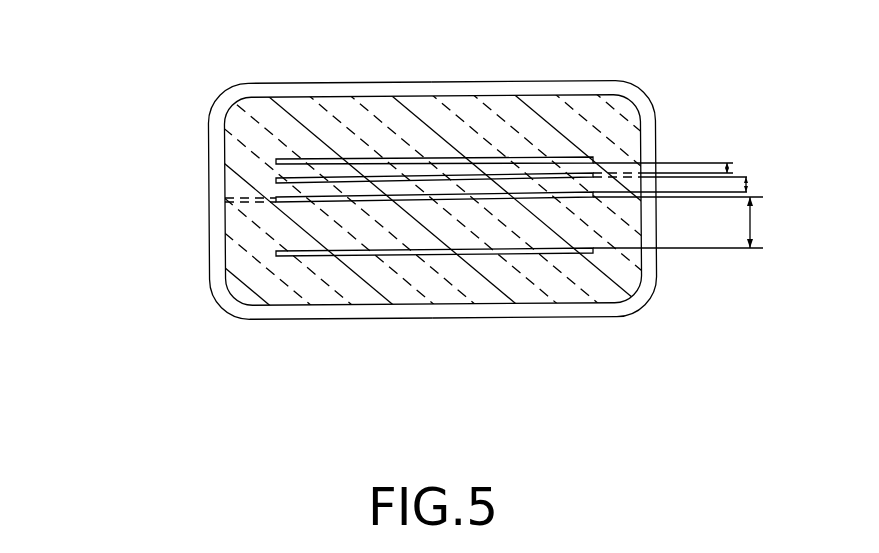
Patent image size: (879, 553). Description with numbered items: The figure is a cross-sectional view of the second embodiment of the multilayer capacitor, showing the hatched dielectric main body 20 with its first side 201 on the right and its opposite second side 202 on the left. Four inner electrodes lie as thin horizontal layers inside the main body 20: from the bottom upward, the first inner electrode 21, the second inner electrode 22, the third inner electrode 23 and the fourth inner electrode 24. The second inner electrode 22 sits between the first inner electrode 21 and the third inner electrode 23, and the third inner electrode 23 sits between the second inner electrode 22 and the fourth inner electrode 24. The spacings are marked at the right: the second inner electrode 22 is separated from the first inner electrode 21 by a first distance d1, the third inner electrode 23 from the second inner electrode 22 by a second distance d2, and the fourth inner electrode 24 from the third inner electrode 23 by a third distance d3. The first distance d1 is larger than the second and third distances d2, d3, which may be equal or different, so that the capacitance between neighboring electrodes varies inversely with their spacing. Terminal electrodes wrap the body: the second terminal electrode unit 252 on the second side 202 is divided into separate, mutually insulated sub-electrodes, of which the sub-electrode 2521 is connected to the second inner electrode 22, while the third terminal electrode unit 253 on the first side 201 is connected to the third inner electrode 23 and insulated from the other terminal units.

The main body 20 is at (413, 96).
The first side 201 is at (678, 80).
The second side 202 is at (194, 122).
The first inner electrode 21 is at (279, 256).
The second inner electrode 22 is at (282, 203).
The third inner electrode 23 is at (278, 181).
The fourth inner electrode 24 is at (482, 158).
The second terminal electrode unit 252 is at (154, 299).
The sub-electrode 2521 is at (222, 298).
The third terminal electrode unit 253 is at (628, 308).
The first distance d1 is at (692, 222).
The second distance d2 is at (750, 184).
The third distance d3 is at (733, 165).